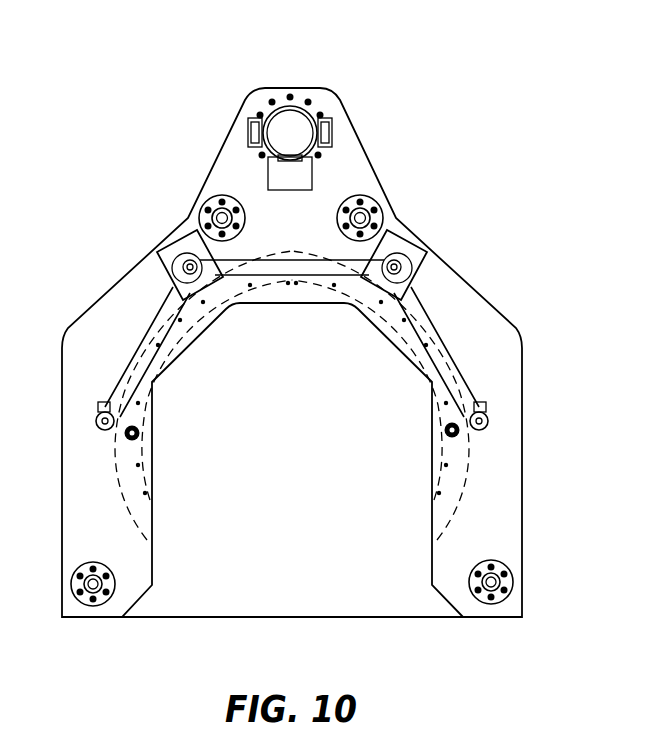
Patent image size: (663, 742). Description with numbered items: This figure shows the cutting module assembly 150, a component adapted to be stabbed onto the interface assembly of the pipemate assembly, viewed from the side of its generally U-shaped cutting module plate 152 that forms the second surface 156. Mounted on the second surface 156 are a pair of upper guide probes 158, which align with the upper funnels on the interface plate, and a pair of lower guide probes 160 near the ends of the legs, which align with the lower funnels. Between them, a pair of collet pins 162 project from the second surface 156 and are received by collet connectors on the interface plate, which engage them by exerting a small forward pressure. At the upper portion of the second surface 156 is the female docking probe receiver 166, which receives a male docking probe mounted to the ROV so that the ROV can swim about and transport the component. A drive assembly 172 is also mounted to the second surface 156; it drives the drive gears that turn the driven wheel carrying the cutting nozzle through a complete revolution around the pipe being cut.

The cutting module assembly 150 is at (490, 170).
The cutting module plate 152 is at (522, 404).
The second surface 156 is at (512, 508).
The upper guide probes 158 is at (200, 222).
The lower guide probes 160 is at (78, 578).
The collet pins 162 is at (142, 433).
The female docking probe receiver 166 is at (317, 116).
The drive assembly 172 is at (428, 310).